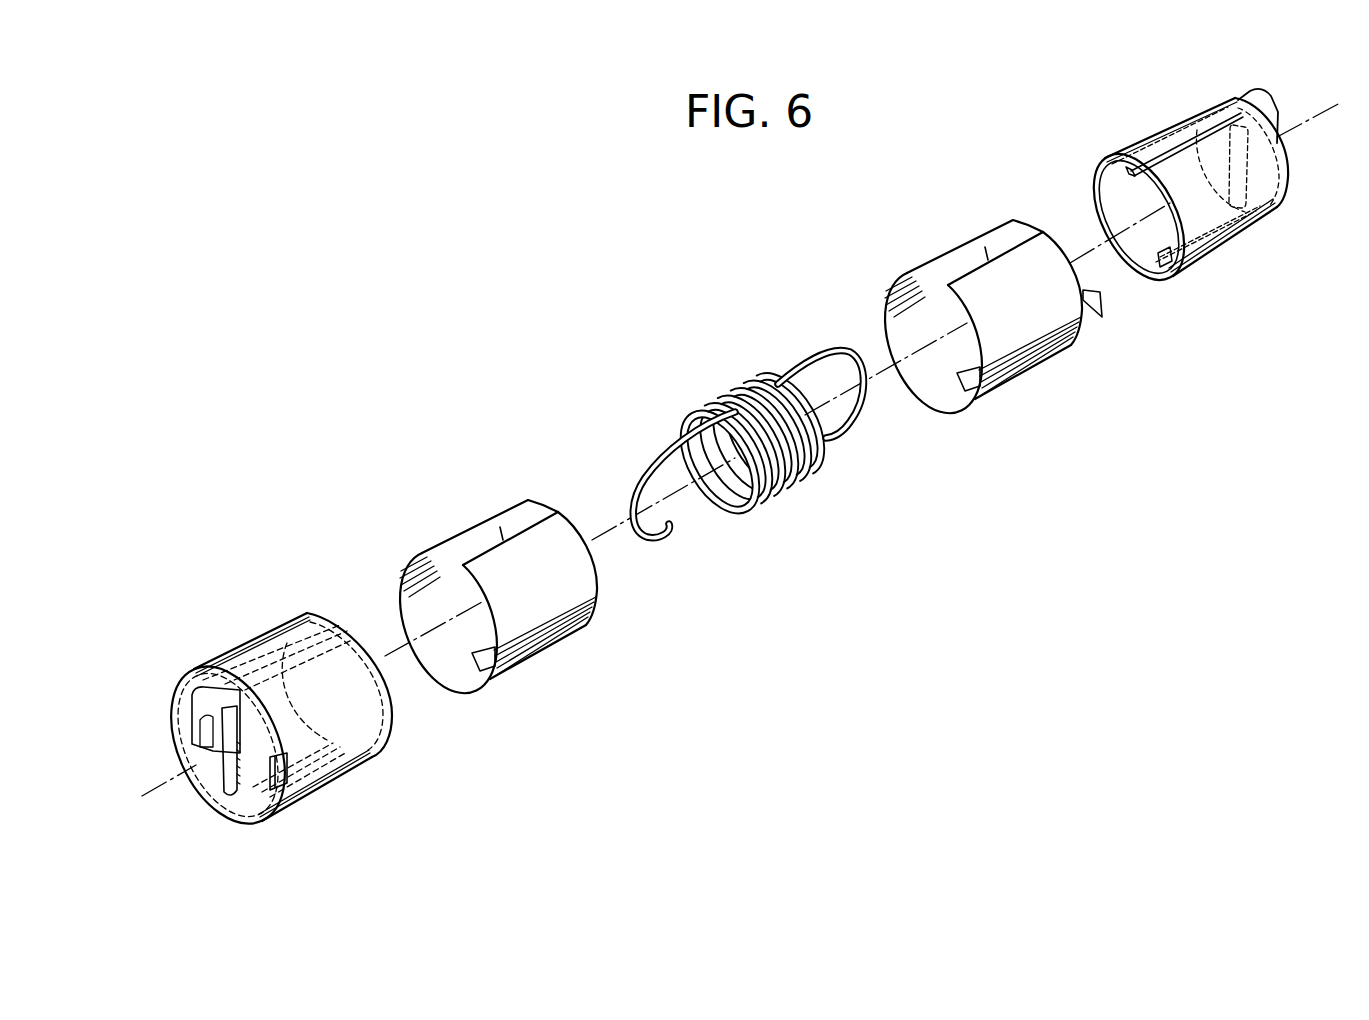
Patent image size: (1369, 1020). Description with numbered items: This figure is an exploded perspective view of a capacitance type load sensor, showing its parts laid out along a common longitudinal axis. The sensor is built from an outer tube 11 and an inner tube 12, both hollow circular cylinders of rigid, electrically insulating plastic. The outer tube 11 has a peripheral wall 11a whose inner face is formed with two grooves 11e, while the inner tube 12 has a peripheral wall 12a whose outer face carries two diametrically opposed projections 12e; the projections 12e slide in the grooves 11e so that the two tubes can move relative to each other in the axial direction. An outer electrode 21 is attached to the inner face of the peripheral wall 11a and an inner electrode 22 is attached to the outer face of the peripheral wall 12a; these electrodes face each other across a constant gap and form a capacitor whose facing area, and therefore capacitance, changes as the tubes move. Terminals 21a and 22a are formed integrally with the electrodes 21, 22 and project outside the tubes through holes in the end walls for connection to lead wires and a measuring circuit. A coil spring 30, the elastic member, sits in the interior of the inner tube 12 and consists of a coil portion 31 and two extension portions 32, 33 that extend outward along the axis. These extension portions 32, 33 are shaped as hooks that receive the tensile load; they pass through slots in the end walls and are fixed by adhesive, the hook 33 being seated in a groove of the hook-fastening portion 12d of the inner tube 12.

The outer tube 11 is at (263, 695).
The peripheral wall 11a is at (245, 640).
The grooves 11e is at (306, 625).
The inner tube 12 is at (1207, 178).
The peripheral wall 12a is at (1143, 137).
The hook-fastening portion 12d is at (1261, 102).
The projections 12e is at (1183, 132).
The outer electrode 21 is at (502, 615).
The terminal 21a is at (497, 662).
The inner electrode 22 is at (1012, 320).
The terminal 22a is at (1098, 318).
The coil spring 30 is at (734, 416).
The coil portion 31 is at (733, 390).
The extension portion 32 is at (650, 460).
The extension portion 33 is at (823, 360).